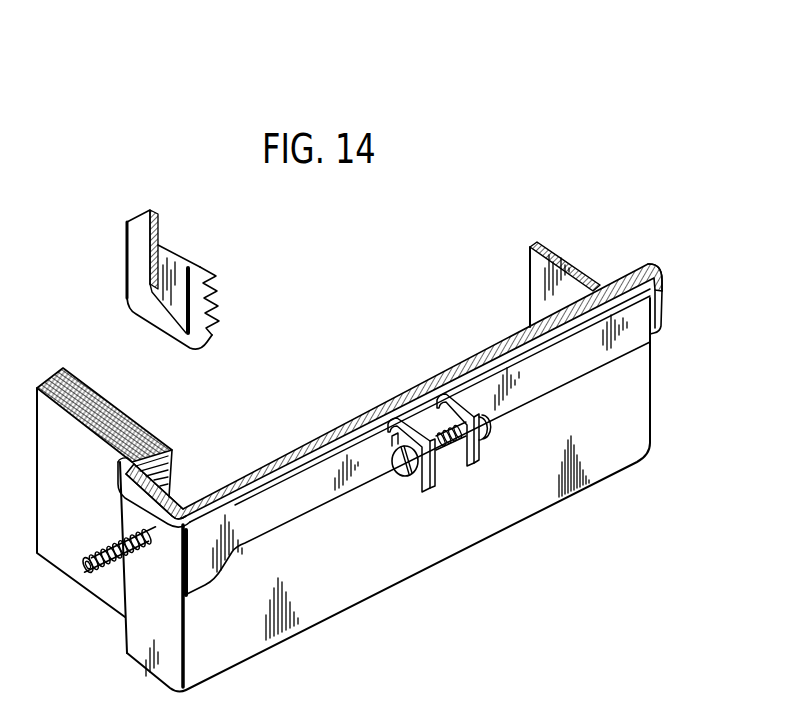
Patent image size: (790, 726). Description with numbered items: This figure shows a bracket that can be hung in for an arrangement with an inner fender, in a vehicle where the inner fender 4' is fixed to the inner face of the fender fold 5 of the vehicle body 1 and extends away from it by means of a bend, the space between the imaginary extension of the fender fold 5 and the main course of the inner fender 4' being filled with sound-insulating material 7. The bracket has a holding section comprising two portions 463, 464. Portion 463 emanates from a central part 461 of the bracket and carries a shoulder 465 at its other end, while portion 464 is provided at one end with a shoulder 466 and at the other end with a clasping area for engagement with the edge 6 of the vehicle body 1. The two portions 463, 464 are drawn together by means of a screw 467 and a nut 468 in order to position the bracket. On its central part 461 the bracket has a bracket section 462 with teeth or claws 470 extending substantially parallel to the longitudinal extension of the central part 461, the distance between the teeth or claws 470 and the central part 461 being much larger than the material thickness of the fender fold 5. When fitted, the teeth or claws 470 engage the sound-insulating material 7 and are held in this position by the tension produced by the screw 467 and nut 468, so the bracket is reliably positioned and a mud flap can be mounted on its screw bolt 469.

The vehicle body 1 is at (363, 578).
The inner fender 4' is at (104, 487).
The fender fold 5 is at (175, 500).
The edge 6 is at (649, 268).
The sound-insulating material 7 is at (127, 418).
The central part 461 is at (165, 567).
The bracket section 462 is at (195, 266).
The portion 463 is at (300, 478).
The portion 464 is at (497, 357).
The shoulder 465 is at (423, 478).
The shoulder 466 is at (462, 452).
The screw 467 is at (401, 476).
The nut 468 is at (487, 433).
The screw bolt 469 is at (92, 580).
The teeth or claws 470 is at (215, 274).